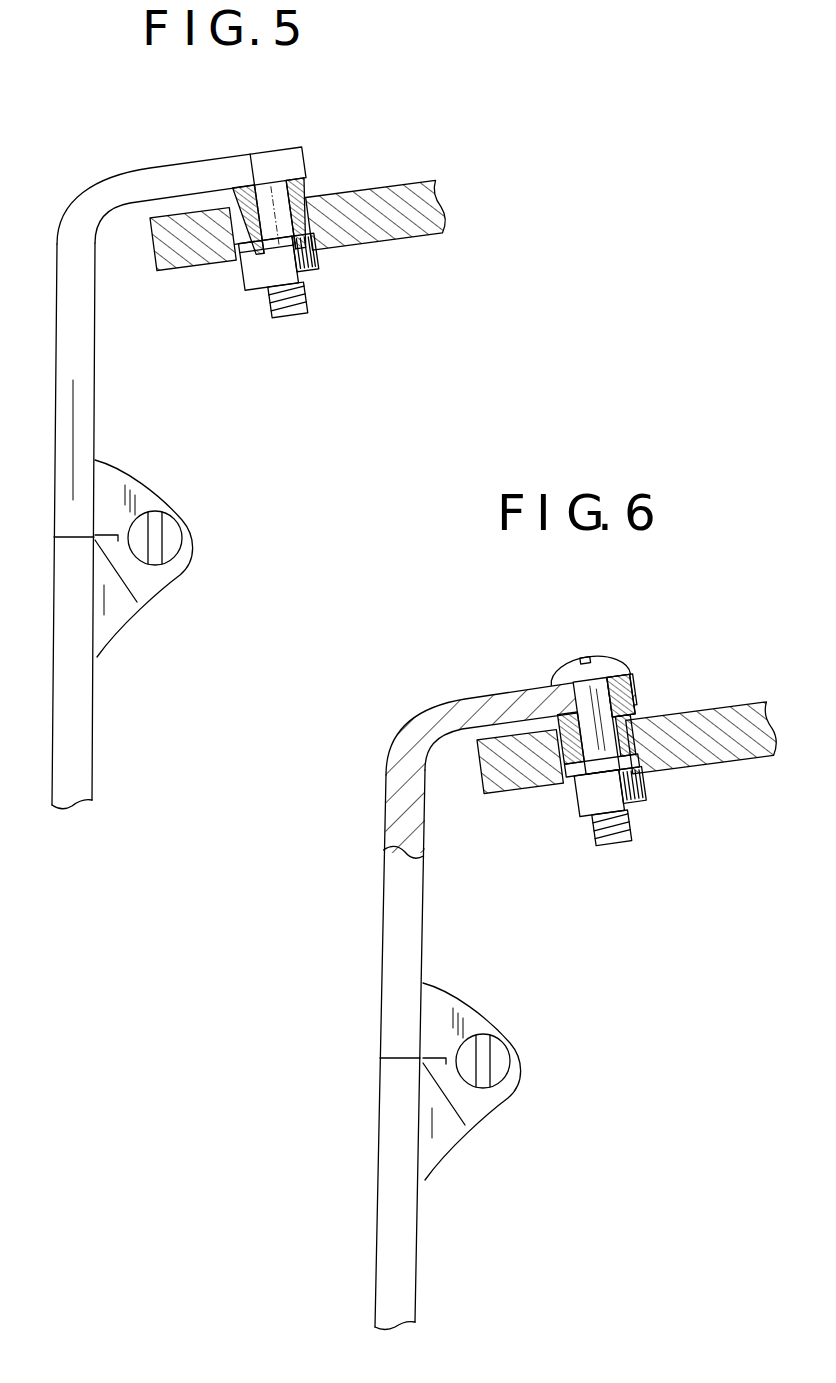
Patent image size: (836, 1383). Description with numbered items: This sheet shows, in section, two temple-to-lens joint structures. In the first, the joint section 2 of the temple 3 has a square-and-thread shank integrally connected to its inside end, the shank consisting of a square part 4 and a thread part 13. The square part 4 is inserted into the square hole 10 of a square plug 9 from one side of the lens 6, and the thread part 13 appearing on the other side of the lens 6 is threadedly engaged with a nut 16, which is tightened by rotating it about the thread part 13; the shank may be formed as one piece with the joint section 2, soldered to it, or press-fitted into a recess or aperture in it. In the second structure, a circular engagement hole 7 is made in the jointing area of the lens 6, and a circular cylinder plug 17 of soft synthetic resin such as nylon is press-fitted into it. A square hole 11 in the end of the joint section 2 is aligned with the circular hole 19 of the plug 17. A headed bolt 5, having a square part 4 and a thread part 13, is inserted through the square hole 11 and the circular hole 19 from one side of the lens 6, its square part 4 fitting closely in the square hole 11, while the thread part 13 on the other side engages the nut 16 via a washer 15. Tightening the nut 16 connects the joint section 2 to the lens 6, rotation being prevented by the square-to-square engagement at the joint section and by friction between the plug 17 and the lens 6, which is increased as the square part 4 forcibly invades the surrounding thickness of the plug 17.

In FIG. 5, the joint section 2 is at (170, 178).
In FIG. 6, the joint section 2 is at (480, 692).
In FIG. 5, the temple 3 is at (84, 413).
In FIG. 6, the temple 3 is at (412, 948).
In FIG. 5, the square part 4 is at (274, 193).
In FIG. 6, the square part 4 is at (645, 780).
In FIG. 6, the headed bolt 5 is at (546, 666).
In FIG. 5, the lens 6 is at (407, 236).
In FIG. 6, the lens 6 is at (757, 760).
In FIG. 6, the circular engagement hole 7 is at (617, 745).
In FIG. 5, the square plug 9 is at (237, 250).
In FIG. 5, the square hole 10 is at (253, 192).
In FIG. 6, the square hole 11 is at (597, 690).
In FIG. 5, the thread part 13 is at (305, 315).
In FIG. 6, the thread part 13 is at (627, 843).
In FIG. 6, the washer 15 is at (585, 778).
In FIG. 5, the nut 16 is at (260, 287).
In FIG. 6, the nut 16 is at (595, 812).
In FIG. 6, the circular cylinder plug 17 is at (560, 752).
In FIG. 6, the circular hole 19 is at (633, 693).